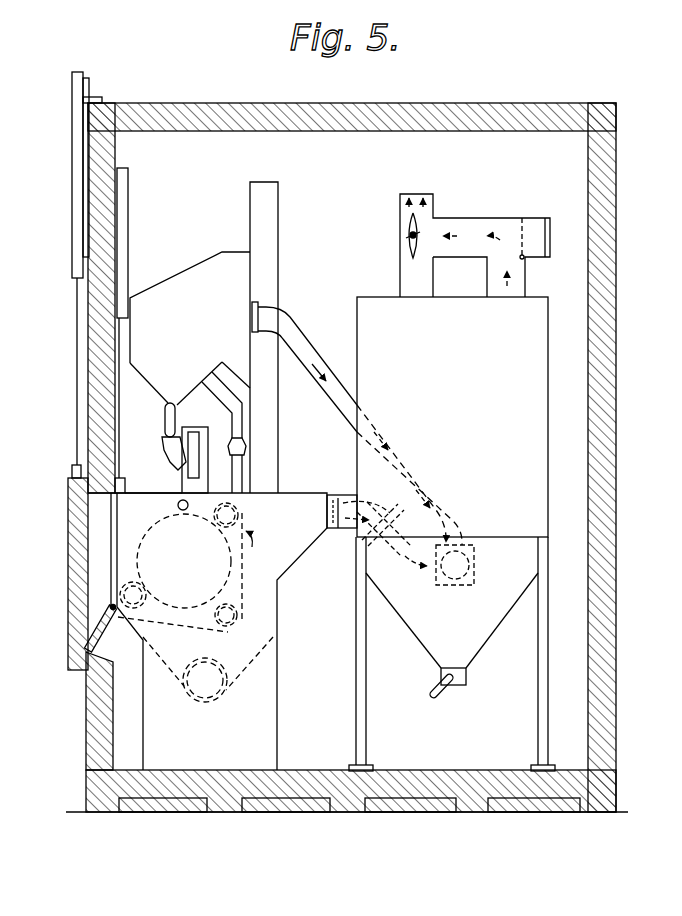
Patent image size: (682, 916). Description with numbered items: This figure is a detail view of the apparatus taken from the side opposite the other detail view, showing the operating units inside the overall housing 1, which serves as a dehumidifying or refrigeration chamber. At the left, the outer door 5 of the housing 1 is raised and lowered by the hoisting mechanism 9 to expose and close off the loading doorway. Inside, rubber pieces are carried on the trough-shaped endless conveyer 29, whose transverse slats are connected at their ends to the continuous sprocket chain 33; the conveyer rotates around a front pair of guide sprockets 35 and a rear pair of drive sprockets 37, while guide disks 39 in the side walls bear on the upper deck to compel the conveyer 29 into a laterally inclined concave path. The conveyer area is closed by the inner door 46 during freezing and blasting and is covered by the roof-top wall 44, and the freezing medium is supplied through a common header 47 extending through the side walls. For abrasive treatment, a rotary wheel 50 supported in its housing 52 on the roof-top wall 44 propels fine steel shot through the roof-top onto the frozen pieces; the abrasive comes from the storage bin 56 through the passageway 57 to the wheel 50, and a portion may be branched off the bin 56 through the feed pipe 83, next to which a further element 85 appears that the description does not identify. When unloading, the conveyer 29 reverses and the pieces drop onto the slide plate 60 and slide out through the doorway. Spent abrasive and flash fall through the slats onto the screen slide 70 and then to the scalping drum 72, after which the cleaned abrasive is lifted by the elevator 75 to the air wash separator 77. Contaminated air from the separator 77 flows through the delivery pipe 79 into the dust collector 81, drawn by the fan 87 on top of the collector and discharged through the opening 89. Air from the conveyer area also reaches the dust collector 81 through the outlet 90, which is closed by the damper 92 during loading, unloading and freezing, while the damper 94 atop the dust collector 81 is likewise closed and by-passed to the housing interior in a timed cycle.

The housing 1 is at (162, 103).
The door 5 is at (70, 534).
The hoisting mechanism 9 is at (72, 231).
The conveyer 29 is at (258, 550).
The sprocket chain 33 is at (243, 590).
The guide sprockets 35 is at (144, 604).
The drive sprockets 37 is at (239, 513).
The guide disks 39 is at (158, 521).
The roof-top wall 44 is at (141, 493).
The door 46 is at (118, 383).
The header 47 is at (177, 506).
The rotary wheel 50 is at (200, 445).
The housing 52 is at (194, 427).
The storage bin 56 is at (152, 387).
The passageway 57 is at (164, 455).
The slide plate 60 is at (114, 613).
The screen slide 70 is at (158, 657).
The scalping drum 72 is at (217, 663).
The elevator 75 is at (278, 456).
The separator 77 is at (196, 284).
The delivery pipe 79 is at (299, 346).
The dust collector 81 is at (477, 455).
The feed pipe 83 is at (214, 385).
The nozzle 85 is at (235, 453).
The fan 87 is at (399, 230).
The opening 89 is at (420, 196).
The outlet 90 is at (344, 489).
The damper 92 is at (420, 535).
The damper 94 is at (521, 240).